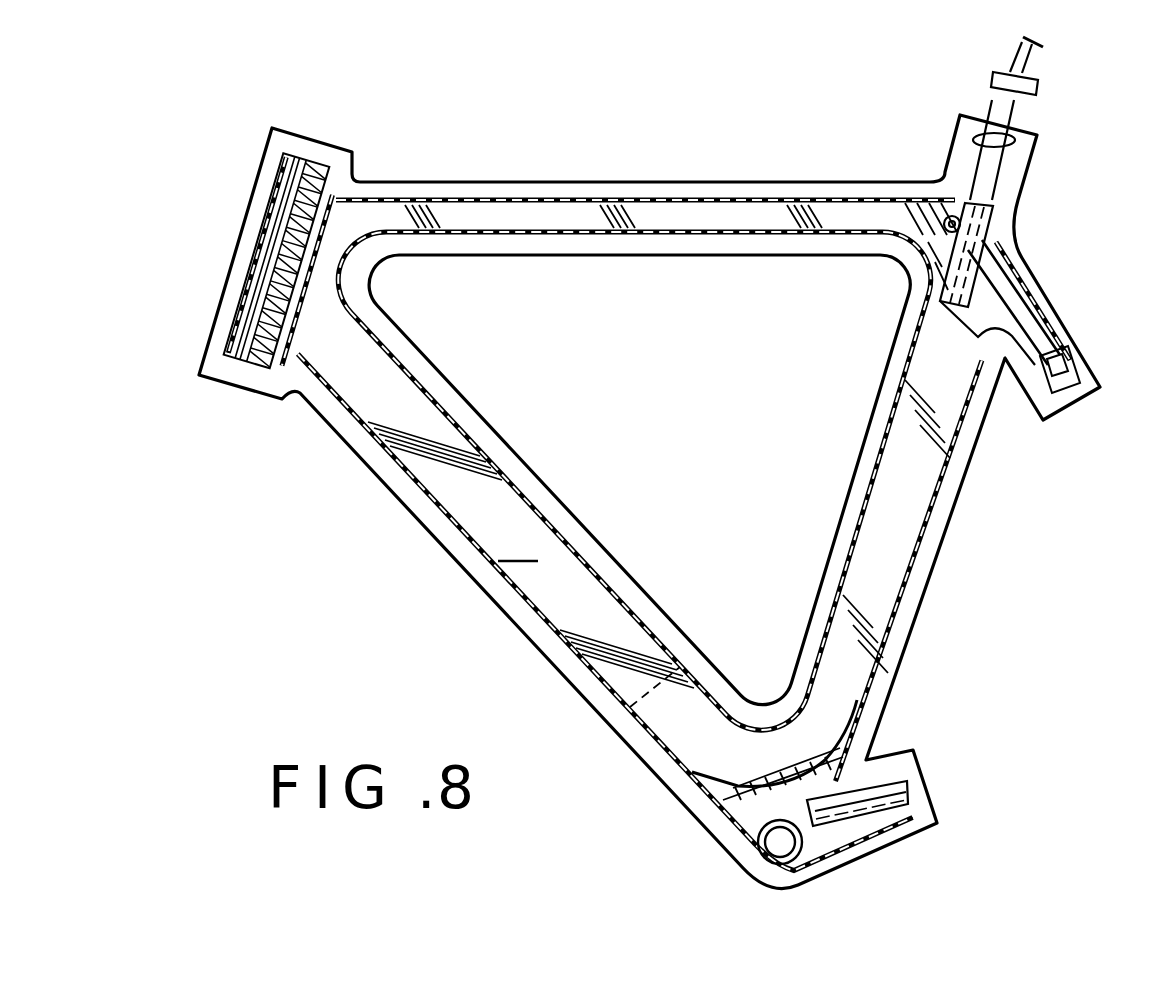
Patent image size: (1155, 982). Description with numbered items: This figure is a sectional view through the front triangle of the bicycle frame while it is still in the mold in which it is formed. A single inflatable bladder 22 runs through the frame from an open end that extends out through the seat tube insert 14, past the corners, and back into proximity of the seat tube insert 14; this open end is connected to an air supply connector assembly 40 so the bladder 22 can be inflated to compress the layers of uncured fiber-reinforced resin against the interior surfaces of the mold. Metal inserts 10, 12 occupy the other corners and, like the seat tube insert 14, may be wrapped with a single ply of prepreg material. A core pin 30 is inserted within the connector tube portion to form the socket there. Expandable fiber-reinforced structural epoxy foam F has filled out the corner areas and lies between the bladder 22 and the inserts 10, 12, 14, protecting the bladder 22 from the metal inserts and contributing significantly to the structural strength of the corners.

The insert 10 is at (262, 362).
The insert 12 is at (757, 853).
The seat tube insert 14 is at (990, 207).
The bladder 22 is at (649, 502).
The core pin 30 is at (920, 832).
The air supply connector assembly 40 is at (1028, 108).
The foam filling F is at (283, 360).